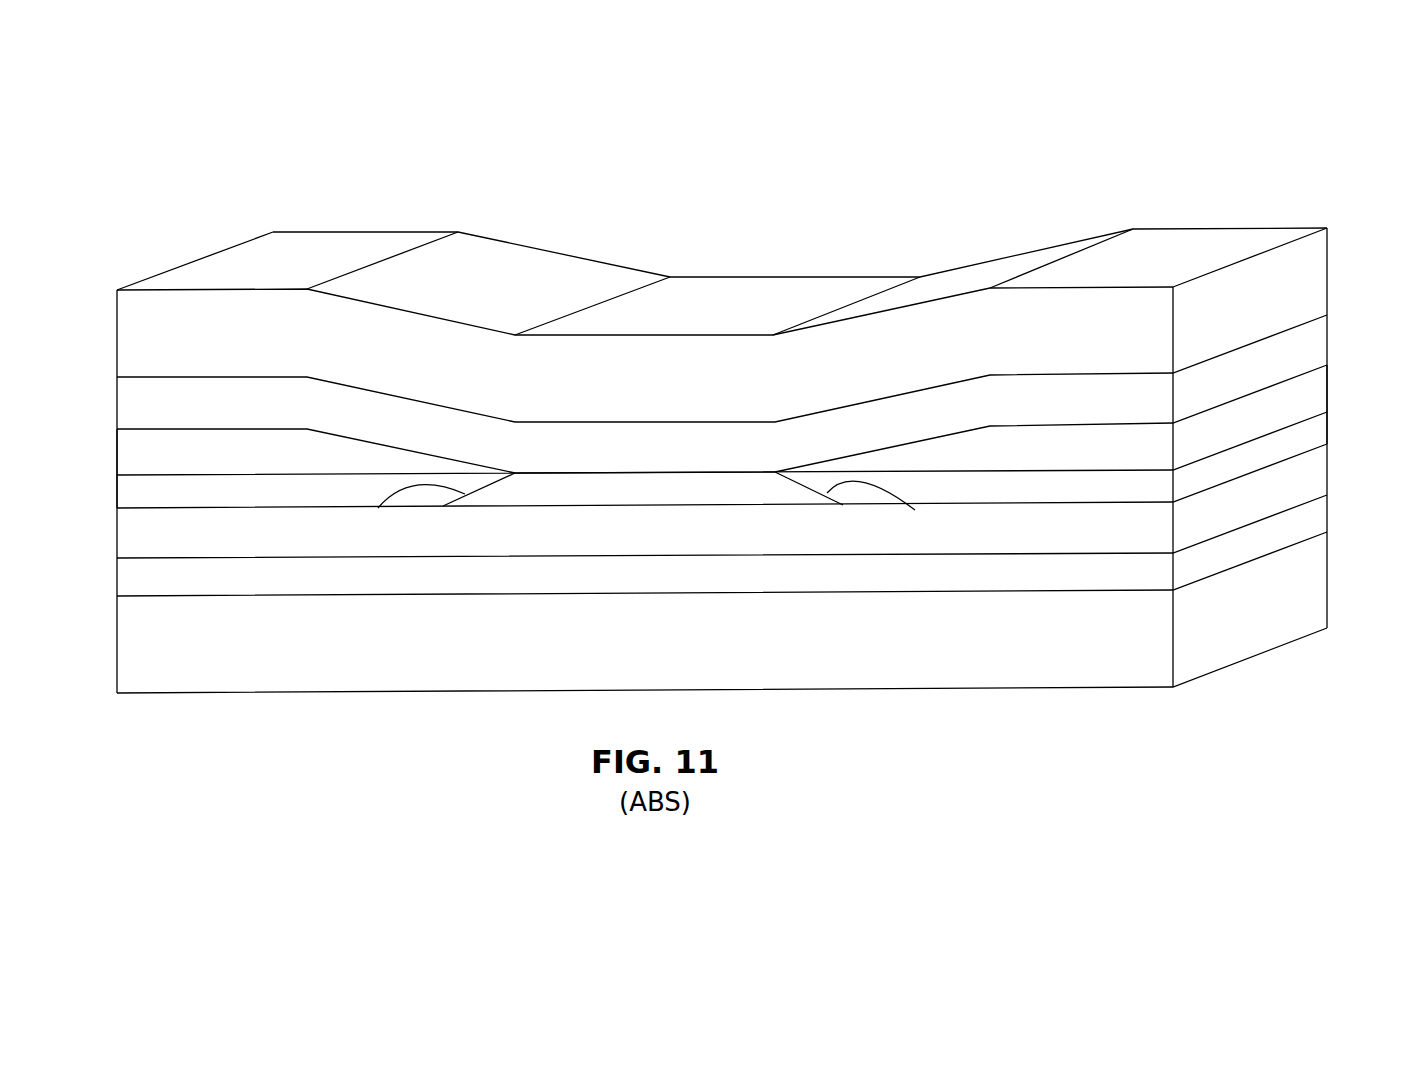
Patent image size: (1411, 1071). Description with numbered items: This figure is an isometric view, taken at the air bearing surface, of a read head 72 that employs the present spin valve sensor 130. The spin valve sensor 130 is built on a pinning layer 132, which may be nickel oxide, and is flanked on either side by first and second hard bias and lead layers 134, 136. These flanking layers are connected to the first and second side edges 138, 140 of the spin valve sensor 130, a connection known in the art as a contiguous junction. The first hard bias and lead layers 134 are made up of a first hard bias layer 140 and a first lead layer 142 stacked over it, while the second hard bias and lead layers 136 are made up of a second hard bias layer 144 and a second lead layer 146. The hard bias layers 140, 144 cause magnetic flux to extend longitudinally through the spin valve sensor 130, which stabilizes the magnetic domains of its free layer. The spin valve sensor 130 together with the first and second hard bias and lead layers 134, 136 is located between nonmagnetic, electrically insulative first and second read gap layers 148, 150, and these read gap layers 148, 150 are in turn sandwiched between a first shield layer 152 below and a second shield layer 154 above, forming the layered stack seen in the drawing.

The read head 72 is at (800, 245).
The spin valve sensor 130 is at (553, 468).
The pinning layer 132 is at (848, 542).
The first hard bias and lead layers 134 is at (112, 430).
The second hard bias and lead layers 136 is at (1333, 364).
The first side edge 138 is at (378, 508).
The first hard bias layer 140 is at (162, 493).
The first lead layer 142 is at (162, 445).
The second hard bias layer 144 is at (1118, 488).
The second lead layer 146 is at (1117, 437).
The first read gap layer 148 is at (415, 572).
The second read gap layer 150 is at (373, 408).
The first shield layer 152 is at (298, 668).
The second shield layer 154 is at (572, 267).